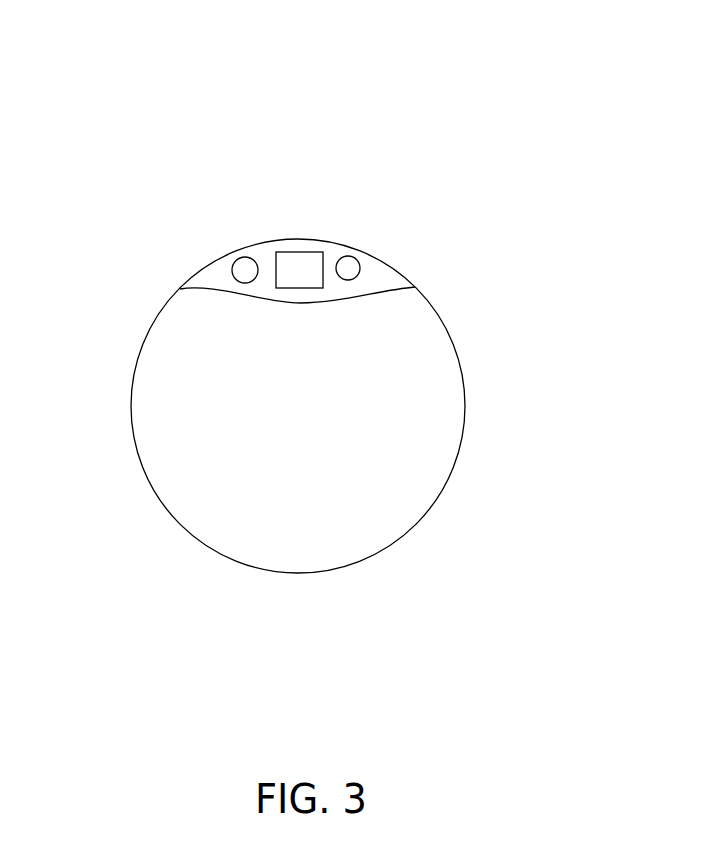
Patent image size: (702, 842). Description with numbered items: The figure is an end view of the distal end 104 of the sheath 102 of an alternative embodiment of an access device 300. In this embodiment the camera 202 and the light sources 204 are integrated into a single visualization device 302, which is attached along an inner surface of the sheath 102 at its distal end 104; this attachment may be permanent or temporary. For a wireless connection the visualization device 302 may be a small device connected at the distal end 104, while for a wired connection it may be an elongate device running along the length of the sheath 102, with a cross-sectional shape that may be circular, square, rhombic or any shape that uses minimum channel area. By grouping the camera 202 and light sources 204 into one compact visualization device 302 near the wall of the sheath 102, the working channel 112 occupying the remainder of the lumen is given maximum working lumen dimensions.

The access device 300 is at (497, 75).
The sheath 102 is at (150, 260).
The distal end 104 is at (137, 368).
The working channel 112 is at (435, 377).
The visualization device 302 is at (265, 252).
The camera 202 is at (315, 252).
The light source 204 is at (355, 262).